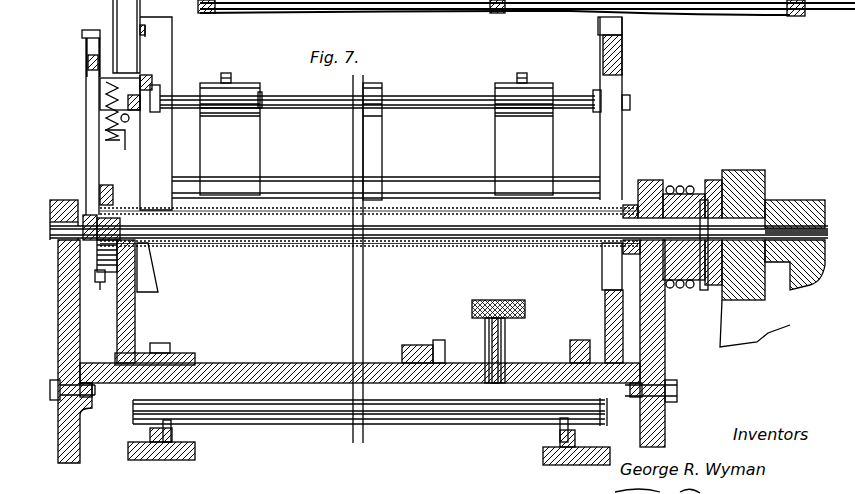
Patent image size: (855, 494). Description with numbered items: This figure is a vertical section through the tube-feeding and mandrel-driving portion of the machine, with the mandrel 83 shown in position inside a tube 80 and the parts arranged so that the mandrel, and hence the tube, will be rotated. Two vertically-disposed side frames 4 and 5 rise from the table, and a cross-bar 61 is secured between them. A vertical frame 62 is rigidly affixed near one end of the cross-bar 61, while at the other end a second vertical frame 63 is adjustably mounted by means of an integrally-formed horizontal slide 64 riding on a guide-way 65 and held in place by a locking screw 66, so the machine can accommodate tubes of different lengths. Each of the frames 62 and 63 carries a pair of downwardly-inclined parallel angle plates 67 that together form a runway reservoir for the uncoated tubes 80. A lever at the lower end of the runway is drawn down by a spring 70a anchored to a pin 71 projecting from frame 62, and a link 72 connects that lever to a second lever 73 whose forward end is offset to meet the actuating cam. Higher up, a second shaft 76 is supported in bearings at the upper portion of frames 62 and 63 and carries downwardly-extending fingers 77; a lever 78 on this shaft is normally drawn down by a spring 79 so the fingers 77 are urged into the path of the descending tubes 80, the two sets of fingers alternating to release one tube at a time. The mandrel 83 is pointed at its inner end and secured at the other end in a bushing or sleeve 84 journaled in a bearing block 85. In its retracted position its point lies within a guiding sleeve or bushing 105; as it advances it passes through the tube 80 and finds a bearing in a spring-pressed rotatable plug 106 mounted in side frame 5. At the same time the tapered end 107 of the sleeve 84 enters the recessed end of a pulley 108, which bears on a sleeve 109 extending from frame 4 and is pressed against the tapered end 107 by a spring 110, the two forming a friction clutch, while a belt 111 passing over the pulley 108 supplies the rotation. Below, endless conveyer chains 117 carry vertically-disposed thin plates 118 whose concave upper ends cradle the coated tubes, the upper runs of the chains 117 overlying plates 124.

The side frame 4 is at (665, 335).
The side frame 5 is at (82, 343).
The cross-bar 61 is at (228, 373).
The vertical frame 62 is at (133, 307).
The second vertical frame 63 is at (622, 62).
The slide 64 is at (531, 345).
The guide-way 65 is at (308, 362).
The locking screw 66 is at (497, 301).
The angle plates 67 is at (172, 65).
The spring 70a is at (100, 260).
The pin 71 is at (100, 280).
The link 72 is at (86, 100).
The second lever 73 is at (100, 37).
The second shaft 76 is at (310, 98).
The fingers 77 is at (388, 154).
The lever 78 is at (152, 80).
The spring 79 is at (103, 120).
The tubes 80 is at (415, 220).
The mandrel 83 is at (393, 228).
The bushing or sleeve 84 is at (812, 243).
The bearing block 85 is at (812, 208).
The guiding sleeve or bushing 105 is at (712, 270).
The spring-pressed rotatable plug 106 is at (62, 198).
The tapered end 107 is at (762, 205).
The pulley 108 is at (748, 290).
The sleeve 109 is at (680, 186).
The spring 110 is at (665, 185).
The belt 111 is at (778, 351).
The endless conveyer chains 117 is at (152, 435).
The plates 118 is at (172, 427).
The plates 124 is at (172, 452).